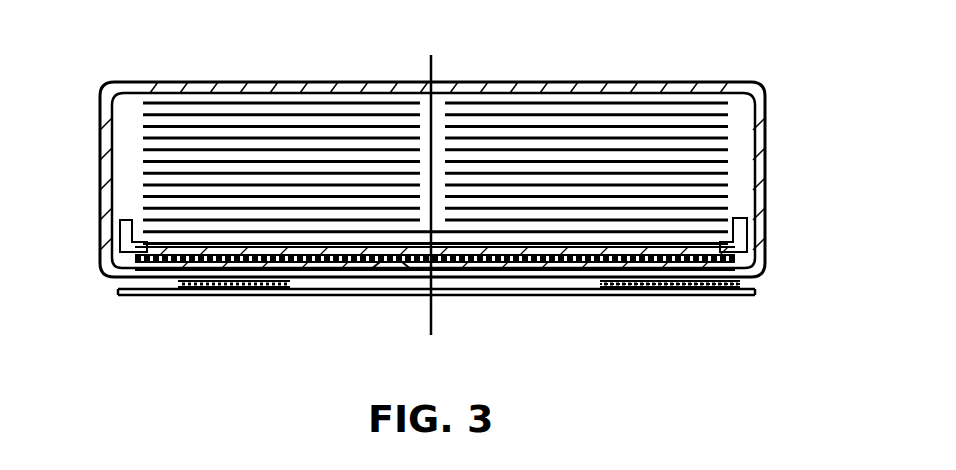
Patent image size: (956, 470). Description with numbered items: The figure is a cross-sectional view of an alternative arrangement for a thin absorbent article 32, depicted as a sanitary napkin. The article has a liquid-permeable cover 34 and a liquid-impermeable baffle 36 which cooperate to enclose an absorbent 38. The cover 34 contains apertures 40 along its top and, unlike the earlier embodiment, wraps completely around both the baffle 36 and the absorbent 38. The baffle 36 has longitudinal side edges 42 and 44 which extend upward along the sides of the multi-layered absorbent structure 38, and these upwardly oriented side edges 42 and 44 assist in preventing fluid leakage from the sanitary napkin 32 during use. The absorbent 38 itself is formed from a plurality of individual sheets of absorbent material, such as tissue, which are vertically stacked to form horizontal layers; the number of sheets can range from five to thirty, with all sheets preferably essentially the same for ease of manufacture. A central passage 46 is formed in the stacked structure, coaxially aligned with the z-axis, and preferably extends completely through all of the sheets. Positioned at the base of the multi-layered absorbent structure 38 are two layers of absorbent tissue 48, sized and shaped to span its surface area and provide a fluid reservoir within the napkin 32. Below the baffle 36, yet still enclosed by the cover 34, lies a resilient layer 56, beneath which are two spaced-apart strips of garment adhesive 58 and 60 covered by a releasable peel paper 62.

The absorbent article 32 is at (722, 60).
The liquid-permeable cover 34 is at (127, 82).
The liquid-impermeable baffle 36 is at (733, 266).
The absorbent 38 is at (735, 163).
The apertures 40 is at (350, 86).
The longitudinal side edge 42 is at (116, 240).
The longitudinal side edge 44 is at (745, 224).
The central passage 46 is at (437, 138).
The absorbent tissue layers 48 is at (318, 240).
The resilient layer 56 is at (487, 270).
The garment adhesive strip 58 is at (216, 262).
The garment adhesive strip 60 is at (652, 290).
The releasable peel paper 62 is at (547, 294).